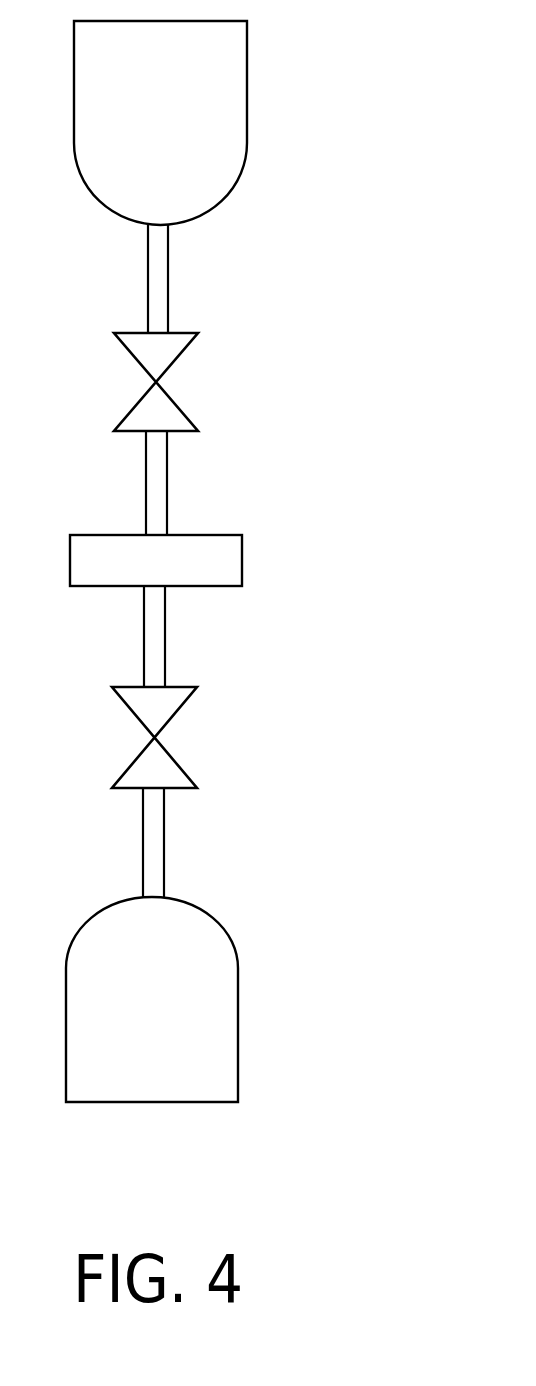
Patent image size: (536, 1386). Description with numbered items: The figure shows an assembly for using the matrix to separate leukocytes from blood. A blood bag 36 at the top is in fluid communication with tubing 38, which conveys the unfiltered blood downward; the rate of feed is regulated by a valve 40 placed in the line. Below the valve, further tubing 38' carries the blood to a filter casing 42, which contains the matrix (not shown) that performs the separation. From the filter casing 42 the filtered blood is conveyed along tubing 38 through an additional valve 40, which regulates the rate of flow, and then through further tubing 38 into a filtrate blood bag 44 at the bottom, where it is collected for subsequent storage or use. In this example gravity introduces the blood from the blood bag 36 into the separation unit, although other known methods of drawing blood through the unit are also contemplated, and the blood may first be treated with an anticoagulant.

The blood bag 36 is at (247, 128).
The tubing 38 is at (208, 561).
The tubing 38' is at (213, 483).
The valve 40 is at (183, 412).
The filter casing 42 is at (242, 565).
The filtrate blood bag 44 is at (238, 1043).